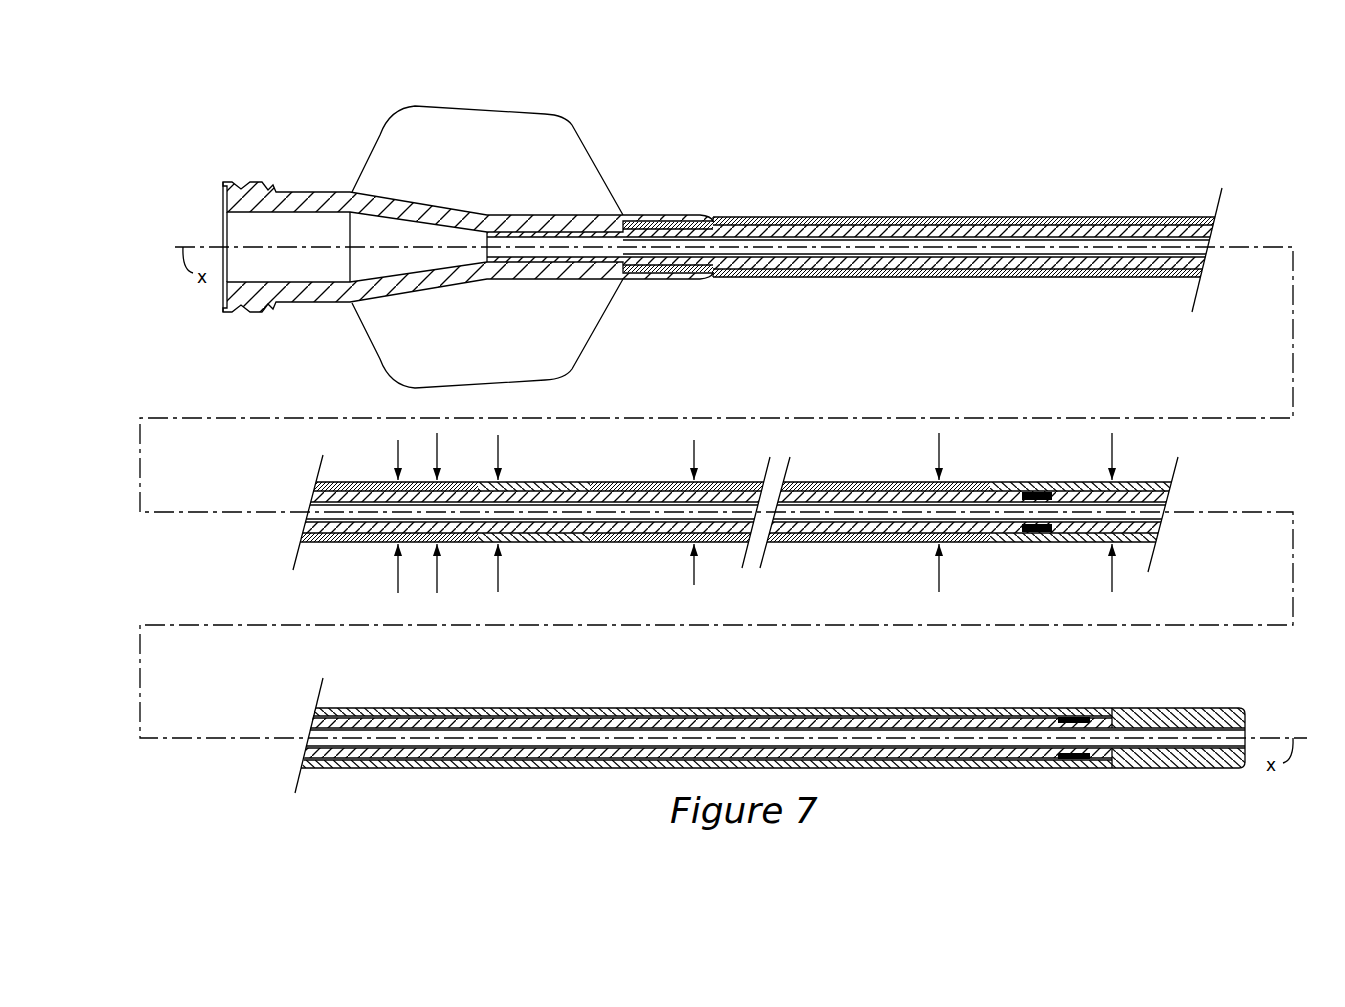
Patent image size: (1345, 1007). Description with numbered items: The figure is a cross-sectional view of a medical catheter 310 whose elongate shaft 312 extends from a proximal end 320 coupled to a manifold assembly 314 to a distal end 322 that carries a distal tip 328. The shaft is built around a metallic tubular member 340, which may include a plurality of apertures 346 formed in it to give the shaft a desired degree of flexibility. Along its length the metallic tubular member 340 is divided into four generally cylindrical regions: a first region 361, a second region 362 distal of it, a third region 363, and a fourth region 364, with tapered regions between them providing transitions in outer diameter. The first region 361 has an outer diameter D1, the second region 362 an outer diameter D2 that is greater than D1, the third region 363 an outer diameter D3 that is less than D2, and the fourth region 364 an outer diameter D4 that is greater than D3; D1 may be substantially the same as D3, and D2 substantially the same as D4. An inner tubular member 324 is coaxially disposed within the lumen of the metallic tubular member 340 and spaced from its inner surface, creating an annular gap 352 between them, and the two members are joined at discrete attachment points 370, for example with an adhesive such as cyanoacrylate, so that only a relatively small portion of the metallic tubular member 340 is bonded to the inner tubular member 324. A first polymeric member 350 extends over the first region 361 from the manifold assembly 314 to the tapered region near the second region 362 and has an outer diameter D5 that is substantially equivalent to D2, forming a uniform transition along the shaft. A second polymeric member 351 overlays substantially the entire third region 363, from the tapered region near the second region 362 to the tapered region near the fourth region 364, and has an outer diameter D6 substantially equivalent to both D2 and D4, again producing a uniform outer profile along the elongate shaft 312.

The medical catheter 310 is at (1151, 118).
The elongate shaft 312 is at (1171, 186).
The manifold assembly 314 is at (616, 130).
The proximal end 320 is at (686, 203).
The distal end 322 is at (807, 737).
The inner tubular member 324 is at (977, 233).
The distal tip 328 is at (1222, 697).
The metallic tubular member 340 is at (1050, 227).
The apertures 346 is at (556, 481).
The first polymeric member 350 is at (883, 217).
The second polymeric member 351 is at (840, 479).
The annular gap 352 is at (786, 714).
The first region 361 is at (344, 555).
The second region 362 is at (552, 528).
The third region 363 is at (790, 522).
The fourth region 364 is at (1070, 560).
The discrete attachment points 370 is at (1040, 484).
The outer diameter of first region D1 is at (381, 519).
The outer diameter of second region D2 is at (514, 521).
The outer diameter of third region D3 is at (677, 521).
The outer diameter of fourth region D4 is at (1127, 521).
The outer diameter of first polymeric member D5 is at (452, 520).
The outer diameter of second polymeric member D6 is at (955, 520).